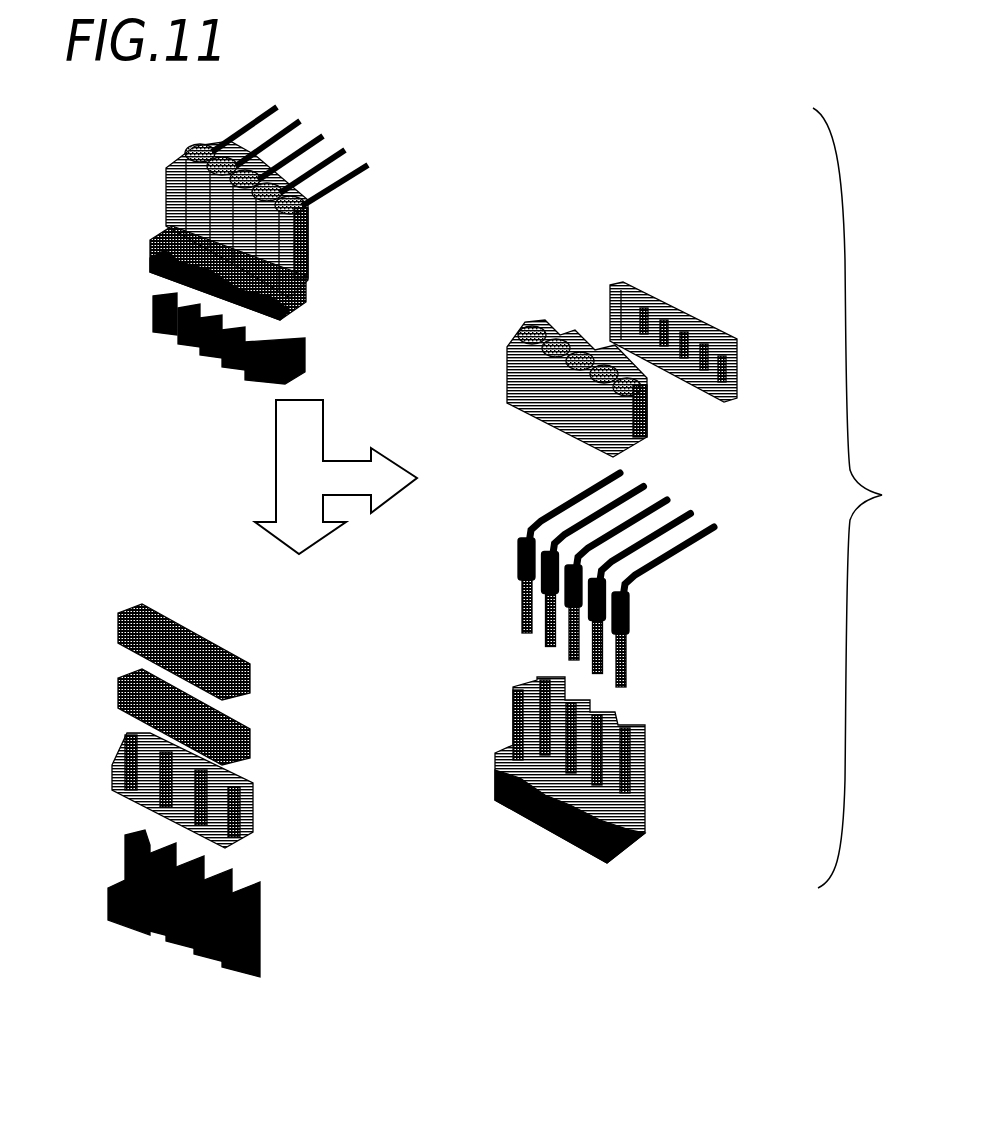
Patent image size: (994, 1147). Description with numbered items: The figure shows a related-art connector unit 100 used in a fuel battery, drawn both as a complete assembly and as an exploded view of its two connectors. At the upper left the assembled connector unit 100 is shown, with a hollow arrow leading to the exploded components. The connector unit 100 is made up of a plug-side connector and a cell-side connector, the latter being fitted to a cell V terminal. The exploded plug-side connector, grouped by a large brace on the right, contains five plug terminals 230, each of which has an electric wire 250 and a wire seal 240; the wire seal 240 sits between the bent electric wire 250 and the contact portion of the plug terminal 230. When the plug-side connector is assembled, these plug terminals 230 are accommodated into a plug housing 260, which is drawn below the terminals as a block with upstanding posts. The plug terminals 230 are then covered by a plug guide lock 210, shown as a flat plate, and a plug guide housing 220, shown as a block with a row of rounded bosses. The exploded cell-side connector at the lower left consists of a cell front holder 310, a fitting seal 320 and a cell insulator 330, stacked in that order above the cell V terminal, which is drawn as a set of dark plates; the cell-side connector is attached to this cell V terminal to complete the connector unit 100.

The connector unit 100 is at (134, 163).
The plug guide lock 210 is at (738, 360).
The plug guide housing 220 is at (647, 423).
The plug terminal 230 is at (628, 668).
The wire seal 240 is at (628, 609).
The electric wire 250 is at (670, 553).
The plug housing 260 is at (645, 812).
The cell front holder 310 is at (248, 683).
The fitting seal 320 is at (244, 746).
The cell insulator 330 is at (250, 810).